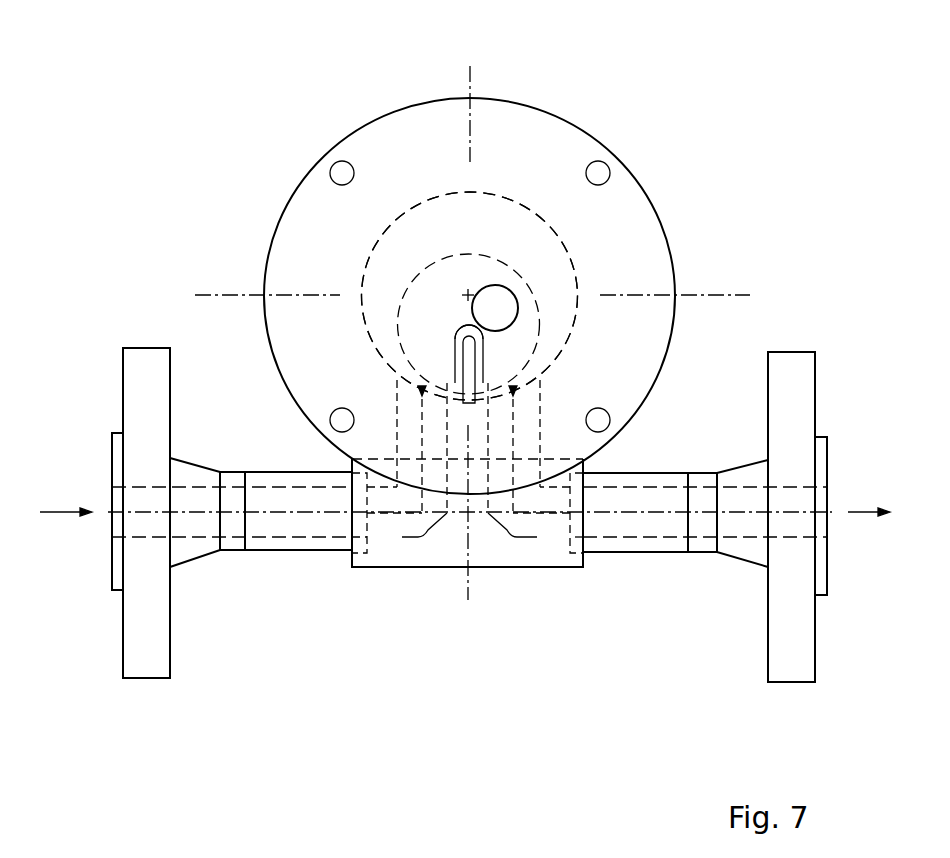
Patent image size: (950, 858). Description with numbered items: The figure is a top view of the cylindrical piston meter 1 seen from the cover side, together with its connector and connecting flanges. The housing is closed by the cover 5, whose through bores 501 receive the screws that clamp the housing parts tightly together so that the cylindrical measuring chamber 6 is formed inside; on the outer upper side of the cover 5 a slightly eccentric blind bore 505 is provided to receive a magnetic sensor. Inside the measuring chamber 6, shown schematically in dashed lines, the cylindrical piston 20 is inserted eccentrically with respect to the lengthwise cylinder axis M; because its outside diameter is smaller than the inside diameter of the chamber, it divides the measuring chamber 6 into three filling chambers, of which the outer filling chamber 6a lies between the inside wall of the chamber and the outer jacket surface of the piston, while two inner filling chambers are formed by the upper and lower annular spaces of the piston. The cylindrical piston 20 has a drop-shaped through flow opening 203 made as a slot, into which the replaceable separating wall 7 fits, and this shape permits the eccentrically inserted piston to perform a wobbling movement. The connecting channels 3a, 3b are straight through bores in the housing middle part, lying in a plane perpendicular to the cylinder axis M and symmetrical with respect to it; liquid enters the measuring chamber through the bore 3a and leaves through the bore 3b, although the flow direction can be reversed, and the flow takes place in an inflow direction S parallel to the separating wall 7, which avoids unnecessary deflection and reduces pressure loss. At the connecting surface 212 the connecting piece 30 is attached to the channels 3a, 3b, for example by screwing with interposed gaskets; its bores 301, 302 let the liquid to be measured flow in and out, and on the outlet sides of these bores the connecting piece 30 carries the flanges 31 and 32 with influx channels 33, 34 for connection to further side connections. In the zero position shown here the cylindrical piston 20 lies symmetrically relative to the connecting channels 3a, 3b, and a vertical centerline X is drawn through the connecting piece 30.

The cylindrical piston meter 1 is at (500, 86).
The cover 5 is at (640, 231).
The through bores 501 is at (604, 172).
The bore 505 is at (512, 303).
The measuring chamber 6 is at (508, 193).
The outer filling chamber 6a is at (385, 263).
The cylindrical piston 20 is at (466, 272).
The through flow opening 203 is at (455, 349).
The separating wall 7 is at (470, 360).
The lengthwise cylinder axis M is at (455, 283).
The inflow direction S is at (420, 395).
The connecting channel 3a is at (397, 443).
The connecting channel 3b is at (540, 383).
The connecting surface 212 is at (600, 453).
The connecting piece 30 is at (437, 557).
The bore 301 is at (392, 537).
The bore 302 is at (535, 540).
The influx channel 33 is at (277, 540).
The influx channel 34 is at (637, 540).
The flange 31 is at (153, 645).
The flange 32 is at (783, 668).
The vertical axis X is at (468, 598).